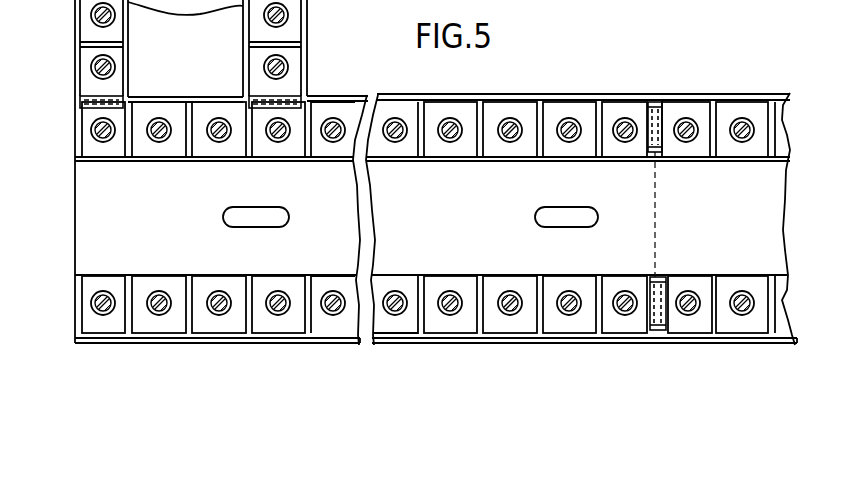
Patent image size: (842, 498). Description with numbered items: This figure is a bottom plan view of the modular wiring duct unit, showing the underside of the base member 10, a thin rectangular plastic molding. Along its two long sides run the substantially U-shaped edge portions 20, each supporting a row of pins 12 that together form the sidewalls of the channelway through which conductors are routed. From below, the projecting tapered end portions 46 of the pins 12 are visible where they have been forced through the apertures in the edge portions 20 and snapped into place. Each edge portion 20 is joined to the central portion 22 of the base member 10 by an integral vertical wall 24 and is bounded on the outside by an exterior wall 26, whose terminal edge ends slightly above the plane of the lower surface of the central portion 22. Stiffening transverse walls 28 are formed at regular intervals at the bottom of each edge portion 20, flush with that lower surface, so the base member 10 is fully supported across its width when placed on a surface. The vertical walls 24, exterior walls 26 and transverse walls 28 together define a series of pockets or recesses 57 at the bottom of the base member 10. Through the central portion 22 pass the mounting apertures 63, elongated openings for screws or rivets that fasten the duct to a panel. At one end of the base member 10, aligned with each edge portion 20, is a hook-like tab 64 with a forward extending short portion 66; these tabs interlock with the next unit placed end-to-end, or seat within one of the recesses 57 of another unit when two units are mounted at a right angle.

The base member 10 is at (71, 243).
The pins 12 is at (563, 318).
The edge portion 20 is at (223, 110).
The central portion 22 is at (483, 168).
The vertical wall 24 is at (206, 282).
The exterior wall 26 is at (292, 80).
The stiffening transverse walls 28 is at (175, 107).
The tapered end portion 46 is at (397, 135).
The pockets or recesses 57 is at (347, 112).
The mounting apertures 63 is at (280, 183).
The hook-like tab 64 is at (86, 112).
The forward extending short portion 66 is at (663, 282).